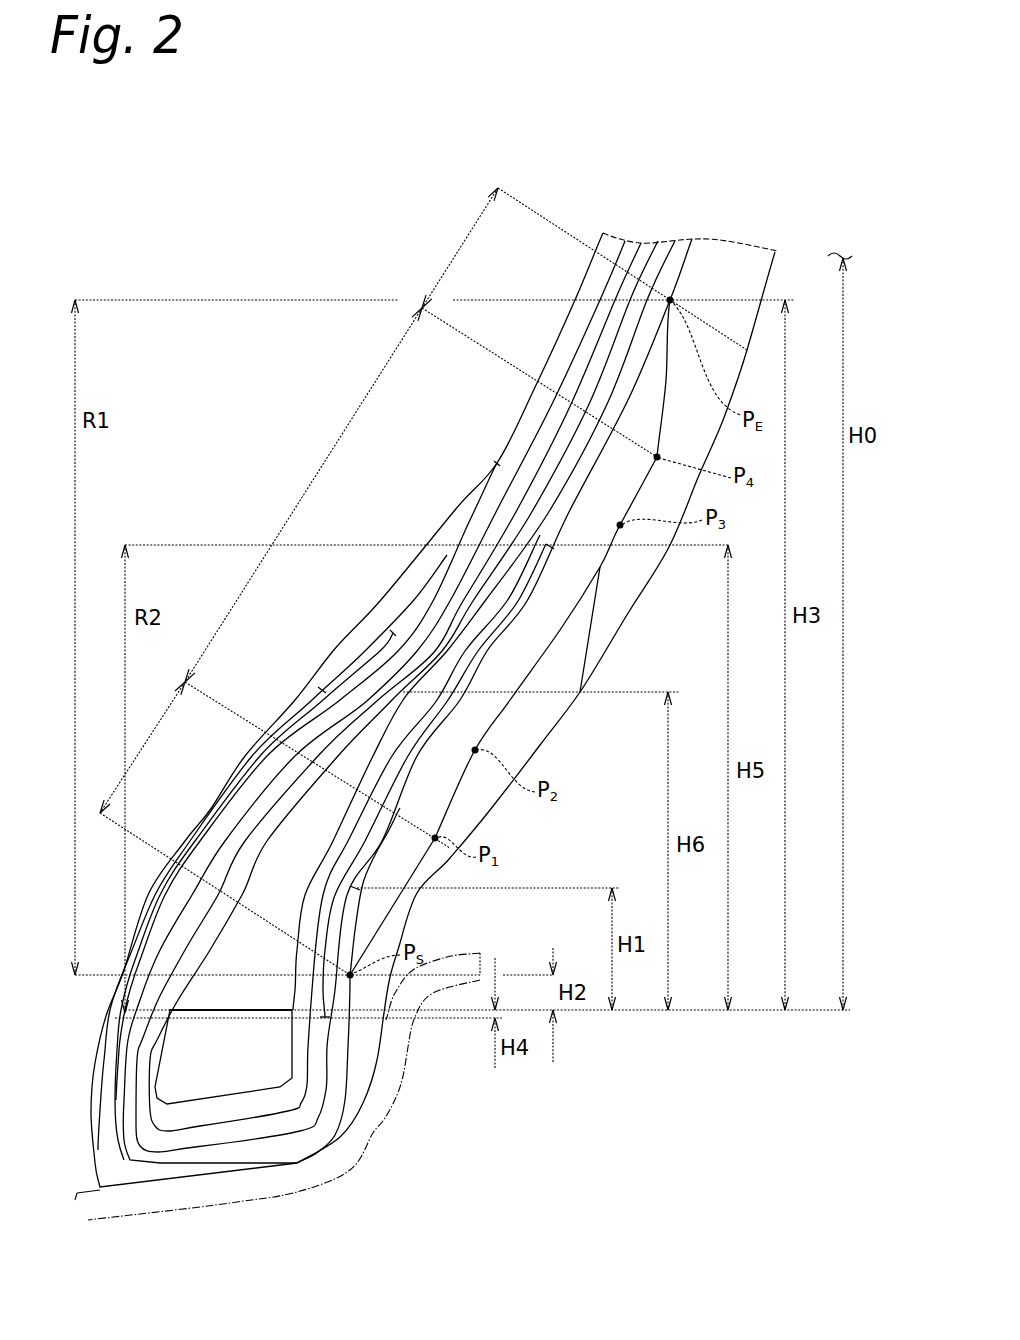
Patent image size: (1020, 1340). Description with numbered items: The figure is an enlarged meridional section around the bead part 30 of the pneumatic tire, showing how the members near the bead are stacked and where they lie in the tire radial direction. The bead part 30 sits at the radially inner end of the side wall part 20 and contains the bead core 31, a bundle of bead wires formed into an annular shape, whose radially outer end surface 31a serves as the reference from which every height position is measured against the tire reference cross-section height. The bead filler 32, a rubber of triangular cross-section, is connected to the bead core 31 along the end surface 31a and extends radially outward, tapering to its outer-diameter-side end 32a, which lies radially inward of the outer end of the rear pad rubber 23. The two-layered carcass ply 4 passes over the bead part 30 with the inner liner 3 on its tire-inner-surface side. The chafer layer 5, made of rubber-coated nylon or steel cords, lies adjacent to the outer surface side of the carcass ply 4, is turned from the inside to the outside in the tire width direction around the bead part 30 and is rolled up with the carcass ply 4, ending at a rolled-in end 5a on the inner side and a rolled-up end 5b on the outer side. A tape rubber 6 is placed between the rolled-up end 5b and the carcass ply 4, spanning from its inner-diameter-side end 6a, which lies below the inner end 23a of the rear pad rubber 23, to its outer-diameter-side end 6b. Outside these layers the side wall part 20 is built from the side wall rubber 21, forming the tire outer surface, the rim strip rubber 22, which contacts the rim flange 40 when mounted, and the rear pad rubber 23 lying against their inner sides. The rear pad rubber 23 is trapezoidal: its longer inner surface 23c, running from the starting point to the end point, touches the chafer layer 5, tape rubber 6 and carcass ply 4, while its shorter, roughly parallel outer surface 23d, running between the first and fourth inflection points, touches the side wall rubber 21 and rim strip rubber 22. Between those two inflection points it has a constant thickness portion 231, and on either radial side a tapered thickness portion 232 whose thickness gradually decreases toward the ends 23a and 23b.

The side wall part 20 is at (778, 232).
The side wall rubber 21 is at (737, 283).
The rim strip rubber 22 is at (540, 733).
The rear pad rubber 23 is at (445, 793).
The inner-diameter-side end 23a is at (372, 925).
The outer-diameter-side end 23b is at (668, 360).
The inner surface 23c is at (438, 600).
The outer surface 23d is at (575, 645).
The inner liner 3 is at (503, 460).
The carcass ply 4 is at (385, 713).
The chafer layer 5 is at (133, 935).
The rolled-in end 5a is at (392, 632).
The rolled-up end 5b is at (360, 888).
The tape rubber 6 is at (494, 624).
The inner-diameter-side end 6a is at (327, 1018).
The outer-diameter-side end 6b is at (496, 462).
The bead part 30 is at (409, 1124).
The bead core 31 is at (237, 1063).
The outer-diameter-side end surface 31a is at (258, 1008).
The bead filler 32 is at (303, 871).
The outer-diameter-side end 32a is at (365, 723).
The rim flange 40 is at (367, 1127).
The constant thickness portion 231 is at (303, 495).
The tapered thickness portion 232 is at (299, 500).